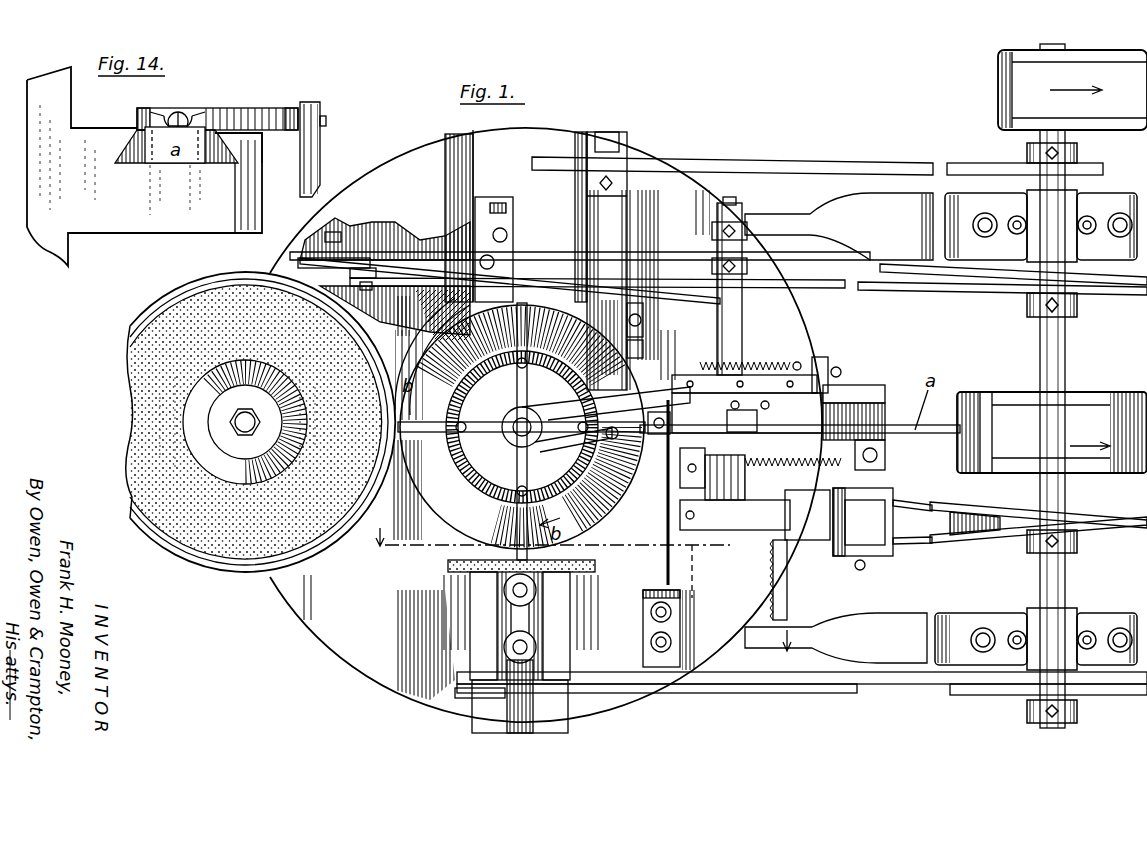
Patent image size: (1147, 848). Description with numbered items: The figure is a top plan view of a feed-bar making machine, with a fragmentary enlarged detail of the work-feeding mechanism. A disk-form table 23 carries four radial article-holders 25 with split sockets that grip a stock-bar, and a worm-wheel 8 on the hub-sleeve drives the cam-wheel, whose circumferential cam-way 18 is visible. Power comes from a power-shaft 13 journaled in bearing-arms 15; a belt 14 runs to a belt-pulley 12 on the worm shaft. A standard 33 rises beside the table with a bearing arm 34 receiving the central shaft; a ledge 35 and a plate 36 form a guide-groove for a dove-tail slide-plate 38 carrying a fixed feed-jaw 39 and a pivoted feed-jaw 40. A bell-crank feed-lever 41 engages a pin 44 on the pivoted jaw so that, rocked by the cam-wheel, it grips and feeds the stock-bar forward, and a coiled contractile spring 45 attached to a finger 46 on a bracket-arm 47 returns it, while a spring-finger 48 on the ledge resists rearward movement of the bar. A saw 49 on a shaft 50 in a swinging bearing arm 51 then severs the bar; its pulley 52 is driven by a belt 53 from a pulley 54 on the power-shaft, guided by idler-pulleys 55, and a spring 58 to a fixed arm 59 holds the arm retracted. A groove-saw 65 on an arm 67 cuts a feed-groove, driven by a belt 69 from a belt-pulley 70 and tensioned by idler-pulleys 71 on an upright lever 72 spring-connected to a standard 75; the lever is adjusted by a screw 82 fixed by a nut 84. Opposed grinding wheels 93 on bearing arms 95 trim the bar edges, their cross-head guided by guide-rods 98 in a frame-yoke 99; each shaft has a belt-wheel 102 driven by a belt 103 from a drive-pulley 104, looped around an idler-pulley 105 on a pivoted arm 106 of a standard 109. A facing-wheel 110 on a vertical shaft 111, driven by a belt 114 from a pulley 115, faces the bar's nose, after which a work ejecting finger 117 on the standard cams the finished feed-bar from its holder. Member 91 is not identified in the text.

In FIG. 1, the worm-wheel 8 is at (576, 598).
In FIG. 1, the belt-pulley 12 is at (630, 160).
In FIG. 1, the power-shaft 13 is at (1058, 352).
In FIG. 1, the belt 14 is at (805, 163).
In FIG. 1, the bearing-arms 15 is at (895, 220).
In FIG. 1, the circumferential cam-way 18 is at (405, 540).
In FIG. 1, the table 23 is at (522, 427).
In FIG. 1, the article-holders 25 is at (517, 322).
In FIG. 14, the standard 33 is at (52, 250).
In FIG. 1, the standard 33 is at (848, 383).
In FIG. 1, the bearing arm 34 is at (562, 398).
In FIG. 14, the ledge 35 is at (160, 218).
In FIG. 1, the ledge 35 is at (847, 372).
In FIG. 14, the plate 36 is at (250, 185).
In FIG. 14, the slide-plate 38 is at (223, 156).
In FIG. 1, the slide-plate 38 is at (870, 412).
In FIG. 14, the feed-jaw 39 is at (152, 112).
In FIG. 1, the feed-jaw 39 is at (747, 433).
In FIG. 14, the feed-jaw 40 is at (250, 108).
In FIG. 1, the feed-jaw 40 is at (755, 436).
In FIG. 14, the feed-lever 41 is at (312, 157).
In FIG. 1, the feed-lever 41 is at (715, 476).
In FIG. 14, the pin 44 is at (327, 121).
In FIG. 1, the pin 44 is at (750, 486).
In FIG. 1, the coiled contractile spring 45 is at (813, 467).
In FIG. 1, the finger 46 is at (880, 477).
In FIG. 1, the bracket-arm 47 is at (728, 436).
In FIG. 14, the spring-finger 48 is at (177, 112).
In FIG. 1, the spring-finger 48 is at (656, 412).
In FIG. 1, the saw 49 is at (666, 565).
In FIG. 1, the shaft 50 is at (766, 532).
In FIG. 1, the swinging bearing arm 51 is at (720, 526).
In FIG. 1, the pulley 52 is at (837, 535).
In FIG. 1, the belt 53 is at (962, 509).
In FIG. 1, the pulley 54 is at (1100, 517).
In FIG. 1, the idler-pulleys 55 is at (878, 506).
In FIG. 1, the coiled contractile spring 58 is at (773, 580).
In FIG. 1, the fixed arm 59 is at (788, 597).
In FIG. 1, the groove-saw 65 is at (598, 436).
In FIG. 1, the arm 67 is at (648, 346).
In FIG. 1, the belt 69 is at (670, 282).
In FIG. 1, the belt-pulley 70 is at (1013, 292).
In FIG. 1, the idler-pulleys 71 is at (376, 278).
In FIG. 1, the upright lever 72 is at (355, 272).
In FIG. 1, the standard 75 is at (514, 214).
In FIG. 1, the screw 82 is at (838, 366).
In FIG. 1, the nut 84 is at (818, 358).
In FIG. 1, the spring housing 91 is at (730, 372).
In FIG. 1, the grinding or trimming wheels 93 is at (450, 566).
In FIG. 1, the bearing arms 95 is at (480, 615).
In FIG. 1, the guide-rods 98 is at (504, 590).
In FIG. 1, the frame-yoke 99 is at (512, 722).
In FIG. 1, the belt-wheel 102 is at (575, 672).
In FIG. 1, the belt 103 is at (887, 690).
In FIG. 1, the drive-pulley 104 is at (1007, 697).
In FIG. 1, the idler-pulley 105 is at (703, 693).
In FIG. 1, the pivoted arm 106 is at (687, 673).
In FIG. 1, the standard 109 is at (652, 666).
In FIG. 1, the facing-wheel 110 is at (218, 289).
In FIG. 1, the vertical shaft 111 is at (236, 424).
In FIG. 1, the belt 114 is at (956, 447).
In FIG. 1, the pulley 115 is at (1102, 397).
In FIG. 1, the work ejecting finger 117 is at (440, 336).